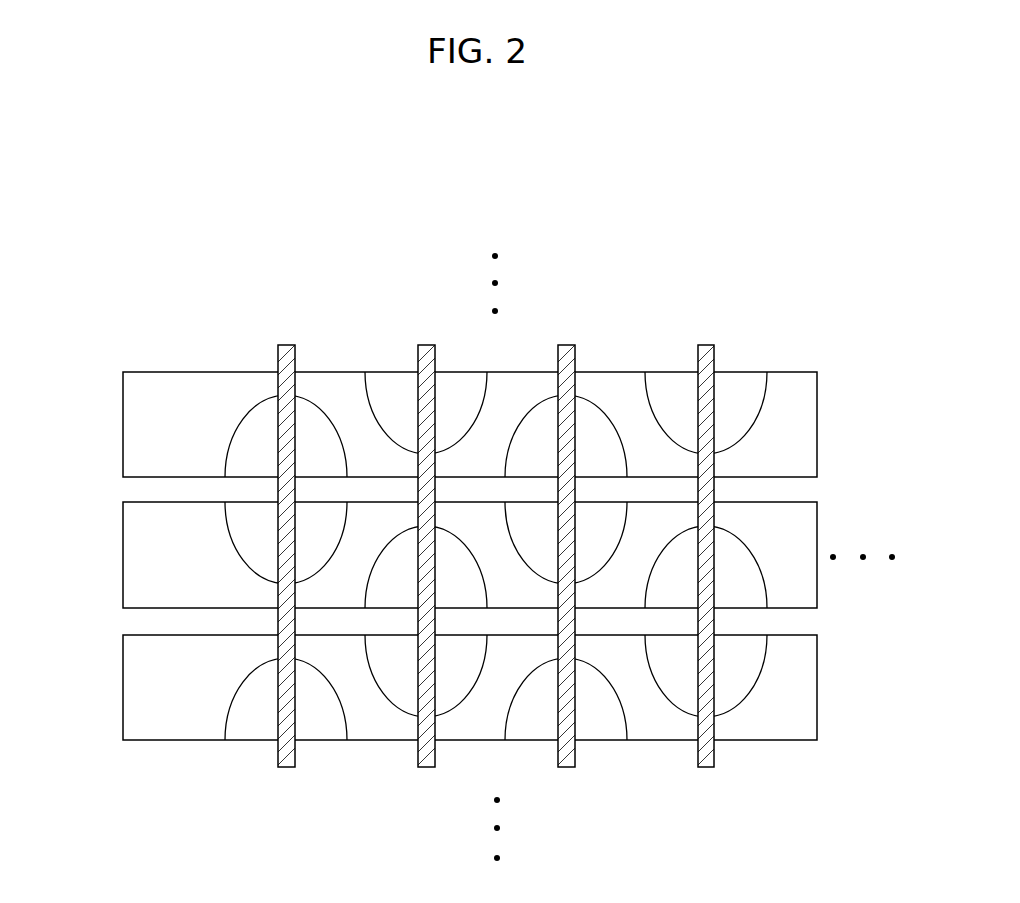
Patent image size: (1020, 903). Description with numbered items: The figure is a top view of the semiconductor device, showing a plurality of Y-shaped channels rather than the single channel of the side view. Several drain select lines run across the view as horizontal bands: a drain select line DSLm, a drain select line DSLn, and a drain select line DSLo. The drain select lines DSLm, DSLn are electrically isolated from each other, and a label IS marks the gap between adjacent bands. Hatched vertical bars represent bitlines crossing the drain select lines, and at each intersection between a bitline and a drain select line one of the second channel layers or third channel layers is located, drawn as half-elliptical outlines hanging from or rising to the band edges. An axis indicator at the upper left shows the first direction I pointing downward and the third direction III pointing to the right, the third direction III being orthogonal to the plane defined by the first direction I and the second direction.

The drain select line DSLm is at (123, 407).
The drain select line DSLn is at (123, 537).
The drain select line o DSLo is at (123, 670).
The isolation structure IS is at (800, 492).
The first direction I is at (86, 235).
The third direction III is at (86, 235).